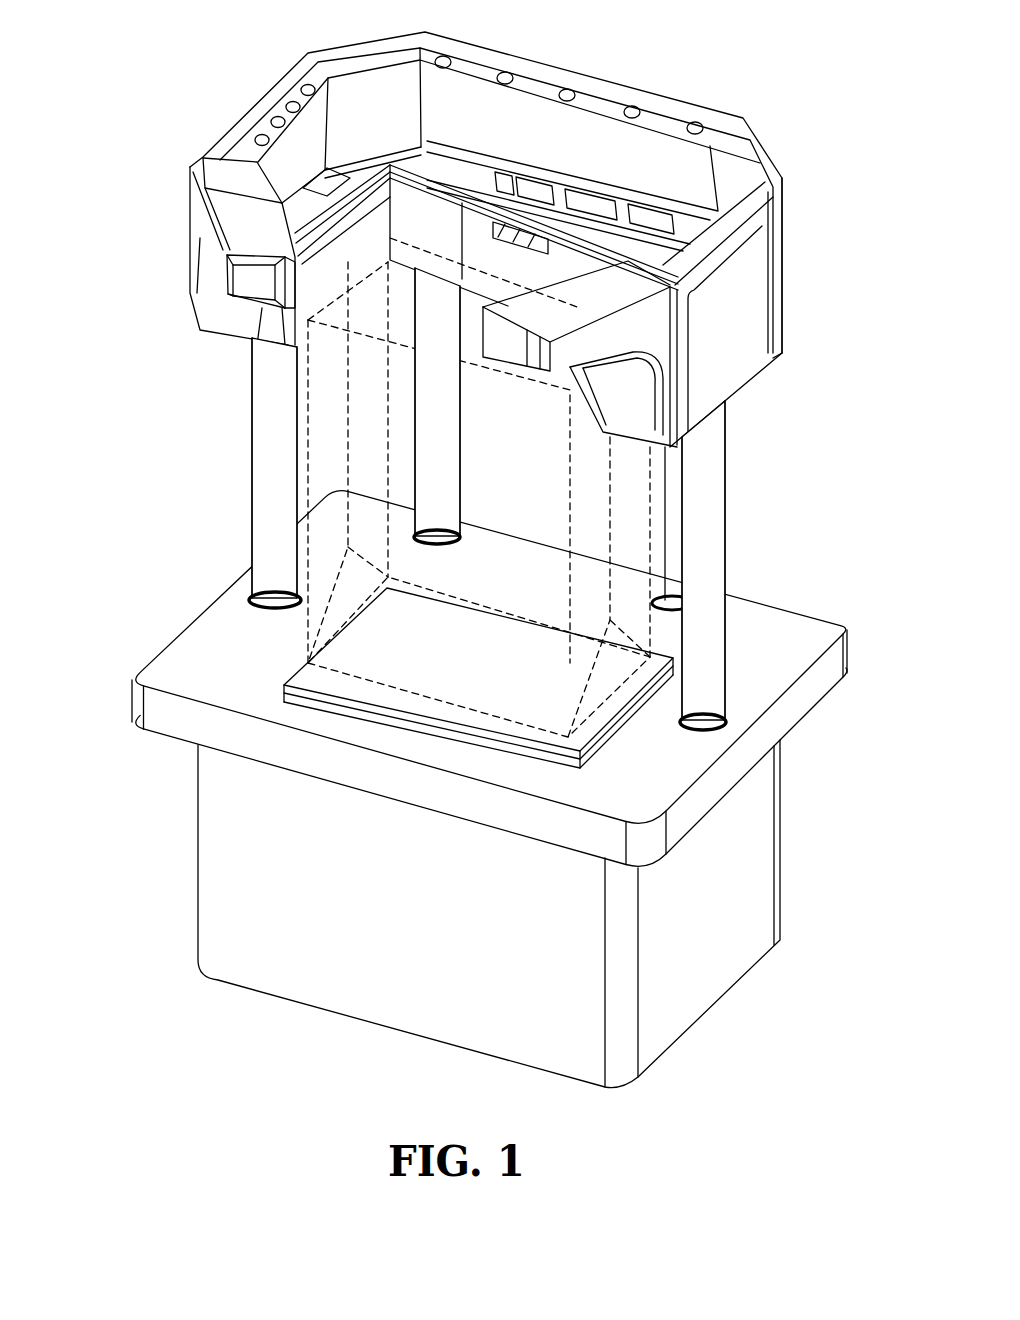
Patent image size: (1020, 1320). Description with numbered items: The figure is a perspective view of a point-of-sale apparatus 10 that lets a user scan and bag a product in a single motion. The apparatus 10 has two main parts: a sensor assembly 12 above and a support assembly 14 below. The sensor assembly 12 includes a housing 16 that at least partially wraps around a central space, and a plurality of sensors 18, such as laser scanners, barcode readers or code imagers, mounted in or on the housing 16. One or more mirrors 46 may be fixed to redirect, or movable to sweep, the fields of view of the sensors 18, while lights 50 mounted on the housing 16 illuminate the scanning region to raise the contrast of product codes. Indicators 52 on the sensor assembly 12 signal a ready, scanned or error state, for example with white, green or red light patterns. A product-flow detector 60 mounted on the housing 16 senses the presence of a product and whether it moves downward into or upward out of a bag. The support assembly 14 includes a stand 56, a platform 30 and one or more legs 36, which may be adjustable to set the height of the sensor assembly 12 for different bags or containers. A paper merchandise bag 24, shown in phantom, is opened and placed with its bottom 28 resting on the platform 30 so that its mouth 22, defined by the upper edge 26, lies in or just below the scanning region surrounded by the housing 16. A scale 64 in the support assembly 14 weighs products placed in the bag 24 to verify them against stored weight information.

The point-of-sale (POS) apparatus 10 is at (112, 393).
The sensor assembly 12 is at (181, 211).
The support assembly 14 is at (206, 587).
The housing 16 is at (787, 228).
The sensors 18 is at (540, 185).
The mouth 22 is at (440, 334).
The paper merchandise bag 24 is at (308, 470).
The upper edge 26 is at (380, 253).
The bottom 28 is at (473, 673).
The platform 30 is at (188, 663).
The legs 36 is at (413, 411).
The mirrors 46 is at (300, 143).
The lights 50 is at (283, 72).
The indicators 52 is at (700, 121).
The stand 56 is at (198, 838).
The product-flow detector 60 is at (493, 232).
The scale 64 is at (610, 727).